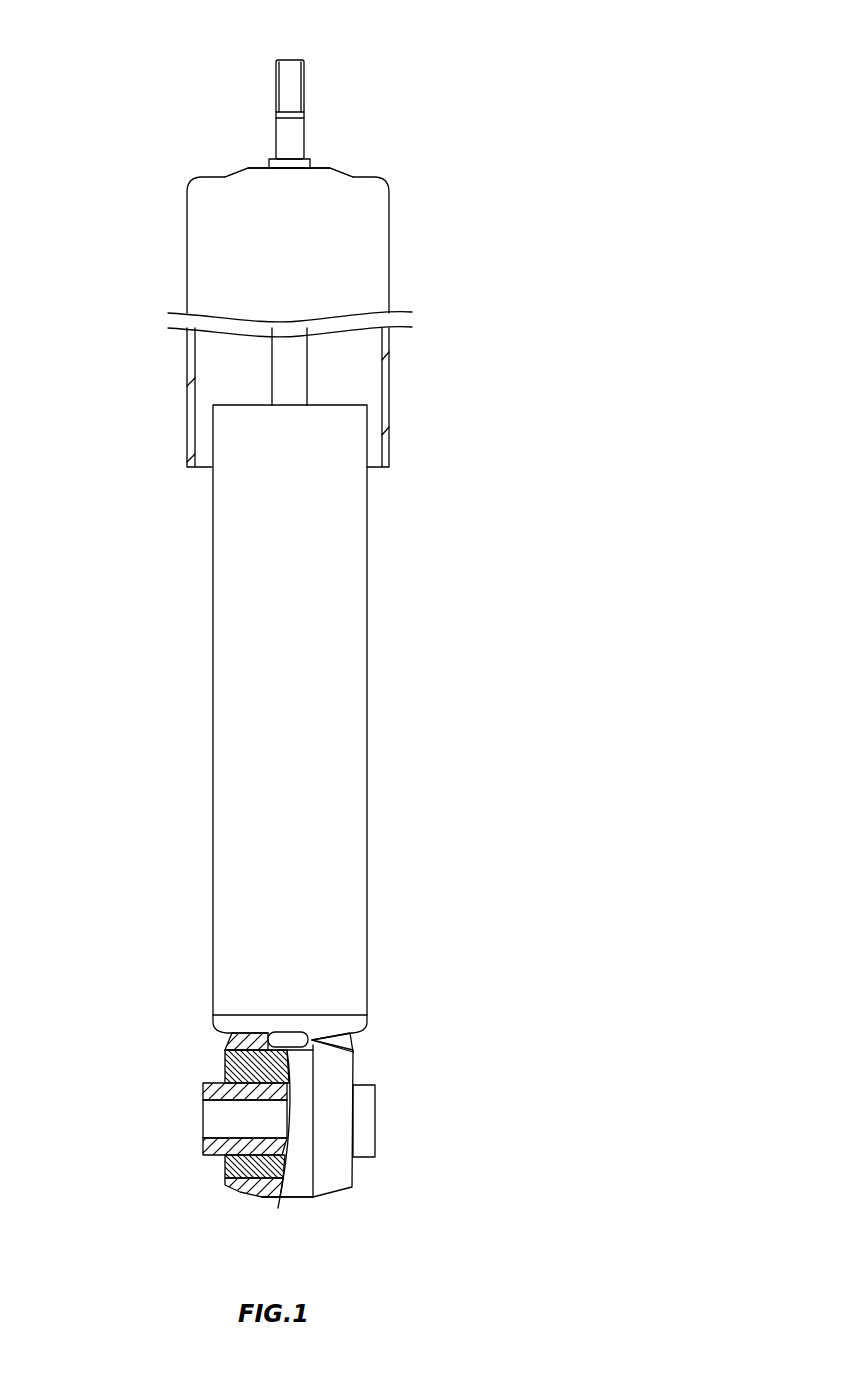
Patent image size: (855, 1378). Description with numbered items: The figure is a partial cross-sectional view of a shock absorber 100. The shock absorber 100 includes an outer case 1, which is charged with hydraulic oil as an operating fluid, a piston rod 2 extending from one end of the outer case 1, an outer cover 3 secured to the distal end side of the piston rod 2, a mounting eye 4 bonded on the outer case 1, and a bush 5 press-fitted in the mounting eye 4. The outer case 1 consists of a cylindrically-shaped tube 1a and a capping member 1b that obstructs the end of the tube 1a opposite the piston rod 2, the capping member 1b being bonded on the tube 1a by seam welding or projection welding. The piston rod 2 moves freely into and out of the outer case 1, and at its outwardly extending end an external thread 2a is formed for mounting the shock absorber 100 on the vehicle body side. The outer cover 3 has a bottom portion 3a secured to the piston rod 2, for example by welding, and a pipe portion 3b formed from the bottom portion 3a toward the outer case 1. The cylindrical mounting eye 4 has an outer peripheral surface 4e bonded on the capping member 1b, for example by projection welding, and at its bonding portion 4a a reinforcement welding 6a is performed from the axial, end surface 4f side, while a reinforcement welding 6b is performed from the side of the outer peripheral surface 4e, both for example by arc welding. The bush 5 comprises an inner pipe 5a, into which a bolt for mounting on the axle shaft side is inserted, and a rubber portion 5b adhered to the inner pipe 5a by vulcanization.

The shock absorber 100 is at (495, 110).
The outer case 1 is at (227, 722).
The tube 1a is at (213, 980).
The capping member 1b is at (213, 1020).
The piston rod 2 is at (272, 362).
The external thread 2a is at (276, 95).
The outer cover 3 is at (378, 180).
The bottom portion 3a is at (333, 172).
The pipe portion 3b is at (389, 377).
The mounting eye 4 is at (355, 1167).
The bonding portion 4a is at (312, 1038).
The outer peripheral surface 4e is at (305, 1197).
The end surface 4f is at (355, 1180).
The bush 5 is at (188, 1138).
The inner pipe 5a is at (203, 1147).
The rubber portion 5b is at (225, 1172).
The reinforcement welding 6a is at (228, 1044).
The reinforcement welding 6b is at (318, 1048).